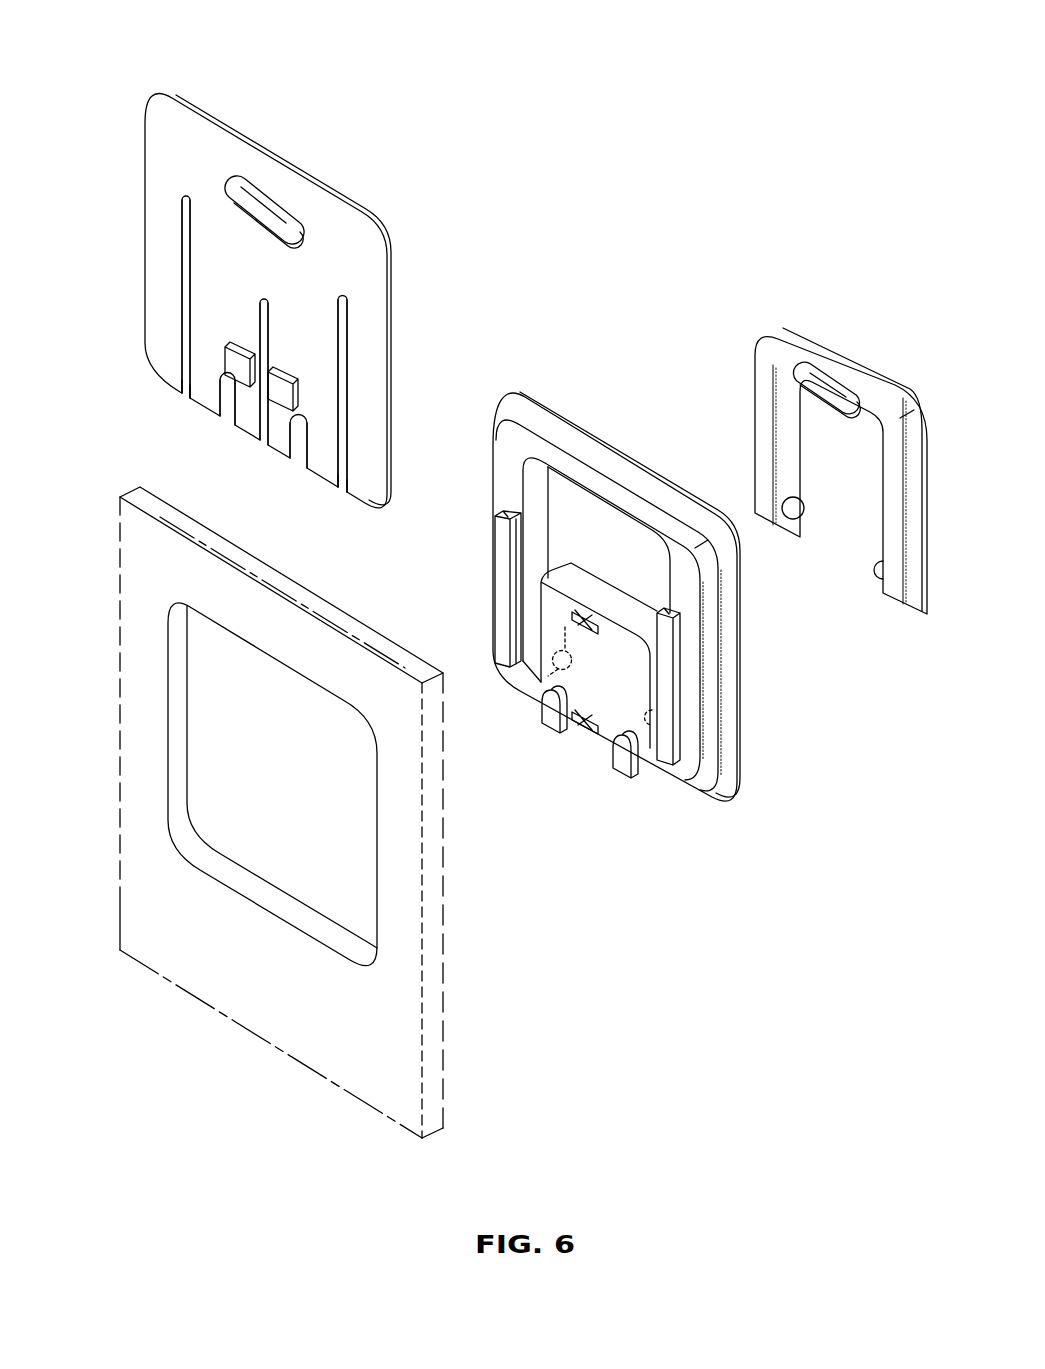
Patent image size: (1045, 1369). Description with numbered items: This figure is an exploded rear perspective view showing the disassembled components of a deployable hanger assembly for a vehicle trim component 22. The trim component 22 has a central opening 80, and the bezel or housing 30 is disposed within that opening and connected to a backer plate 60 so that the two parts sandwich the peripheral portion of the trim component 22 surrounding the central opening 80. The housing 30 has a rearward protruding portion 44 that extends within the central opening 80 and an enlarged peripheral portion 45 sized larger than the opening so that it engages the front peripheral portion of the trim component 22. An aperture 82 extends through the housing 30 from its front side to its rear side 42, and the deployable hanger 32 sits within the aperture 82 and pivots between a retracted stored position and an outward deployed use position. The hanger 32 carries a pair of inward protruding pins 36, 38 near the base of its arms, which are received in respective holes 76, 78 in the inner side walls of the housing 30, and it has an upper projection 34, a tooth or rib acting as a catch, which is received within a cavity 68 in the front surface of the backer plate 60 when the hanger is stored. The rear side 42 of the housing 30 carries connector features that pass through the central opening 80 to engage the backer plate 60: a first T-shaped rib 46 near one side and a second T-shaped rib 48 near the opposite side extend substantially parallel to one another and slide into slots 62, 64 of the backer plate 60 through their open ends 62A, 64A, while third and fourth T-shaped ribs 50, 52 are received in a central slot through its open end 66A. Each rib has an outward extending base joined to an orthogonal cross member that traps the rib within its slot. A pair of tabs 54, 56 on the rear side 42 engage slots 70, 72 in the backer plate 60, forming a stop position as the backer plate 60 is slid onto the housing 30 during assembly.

The trim component 22 is at (244, 812).
The central opening 80 is at (223, 742).
The housing 30 is at (629, 577).
The rearward protruding portion 44 is at (551, 440).
The enlarged peripheral portion 45 is at (603, 450).
The aperture 82 is at (594, 542).
The rear side 42 is at (617, 680).
The first T-shaped rib 46 is at (498, 520).
The second T-shaped rib 48 is at (665, 643).
The third T-shaped rib 50 is at (561, 632).
The fourth T-shaped rib 52 is at (580, 723).
The tab 54 is at (548, 712).
The tab 56 is at (625, 760).
The hole 76 is at (553, 655).
The hole 78 is at (652, 720).
The deployable hanger 32 is at (819, 443).
The upper projection 34 is at (826, 392).
The inward protruding pin 36 is at (803, 505).
The inward protruding pin 38 is at (880, 572).
The backer plate 60 is at (237, 317).
The slot 62 is at (187, 223).
The open end 62A is at (183, 402).
The slot 64 is at (342, 322).
The open end 64A is at (343, 495).
The open end 66A is at (267, 445).
The cavity 68 is at (262, 213).
The slot 70 is at (229, 425).
The slot 72 is at (300, 470).